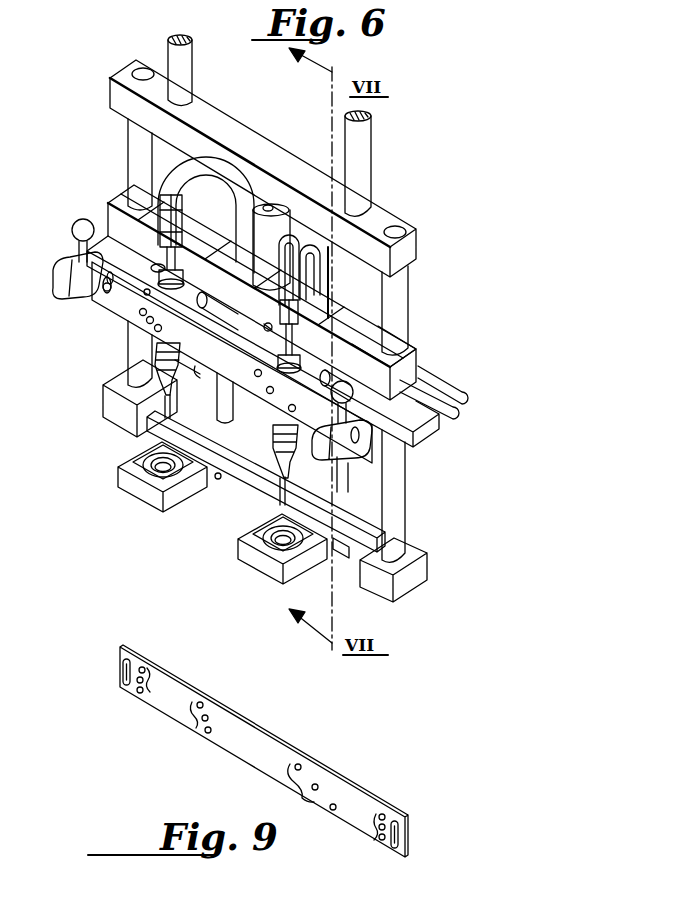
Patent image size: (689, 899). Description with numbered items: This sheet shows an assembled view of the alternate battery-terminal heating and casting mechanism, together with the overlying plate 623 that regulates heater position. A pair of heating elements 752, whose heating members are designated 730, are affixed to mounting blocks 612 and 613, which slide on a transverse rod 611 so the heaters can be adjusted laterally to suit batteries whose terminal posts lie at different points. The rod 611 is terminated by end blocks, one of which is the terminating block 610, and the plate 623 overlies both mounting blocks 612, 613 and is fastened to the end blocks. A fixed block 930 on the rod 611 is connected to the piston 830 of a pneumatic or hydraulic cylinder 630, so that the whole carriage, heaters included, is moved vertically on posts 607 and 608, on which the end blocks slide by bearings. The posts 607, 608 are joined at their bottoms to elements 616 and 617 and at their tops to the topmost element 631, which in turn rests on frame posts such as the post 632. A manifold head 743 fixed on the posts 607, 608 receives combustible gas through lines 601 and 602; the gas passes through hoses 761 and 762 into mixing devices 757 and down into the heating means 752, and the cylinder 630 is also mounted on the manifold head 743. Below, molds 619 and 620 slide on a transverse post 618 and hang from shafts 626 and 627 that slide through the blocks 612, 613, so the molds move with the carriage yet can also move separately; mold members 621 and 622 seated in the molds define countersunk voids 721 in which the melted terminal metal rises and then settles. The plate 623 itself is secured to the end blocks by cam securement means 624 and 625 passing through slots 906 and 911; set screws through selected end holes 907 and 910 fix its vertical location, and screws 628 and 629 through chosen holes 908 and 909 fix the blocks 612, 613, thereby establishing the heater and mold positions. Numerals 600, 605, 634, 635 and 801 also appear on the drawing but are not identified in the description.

In FIG. 6, the clamp arch tube 600 is at (182, 163).
In FIG. 6, the line 601 is at (450, 414).
In FIG. 6, the line 602 is at (438, 377).
In FIG. 6, the inner tube 605 is at (226, 195).
In FIG. 6, the post 607 is at (406, 278).
In FIG. 6, the post 608 is at (130, 137).
In FIG. 6, the terminating block 610 is at (105, 225).
In FIG. 6, the transverse rod 611 is at (108, 279).
In FIG. 6, the mounting block 612 is at (100, 292).
In FIG. 6, the mounting block 613 is at (321, 363).
In FIG. 6, the element 616 is at (112, 411).
In FIG. 6, the element 617 is at (410, 588).
In FIG. 6, the transverse post 618 is at (253, 484).
In FIG. 6, the mold 619 is at (132, 480).
In FIG. 6, the mold 620 is at (285, 565).
In FIG. 6, the mold member 621 is at (150, 459).
In FIG. 6, the mold member 622 is at (265, 540).
In FIG. 6, the plate 623 is at (192, 60).
In FIG. 9, the plate 623 is at (261, 746).
In FIG. 6, the cam means 624 is at (54, 266).
In FIG. 6, the cam means 625 is at (398, 469).
In FIG. 6, the shaft 626 is at (182, 366).
In FIG. 6, the shaft 627 is at (343, 467).
In FIG. 9, the shaft 627 is at (0, 685).
In FIG. 6, the screw 628 is at (147, 316).
In FIG. 6, the screw 629 is at (267, 391).
In FIG. 6, the pneumatic or hydraulic cylinder 630 is at (271, 228).
In FIG. 6, the topmost element 631 is at (384, 203).
In FIG. 6, the post 632 is at (362, 143).
In FIG. 6, the pin 634 is at (217, 477).
In FIG. 6, the stud 635 is at (340, 550).
In FIG. 6, the void 721 is at (167, 472).
In FIG. 6, the heating element 730 is at (167, 407).
In FIG. 6, the manifold head 743 is at (410, 350).
In FIG. 6, the heating element 752 is at (174, 376).
In FIG. 6, the mixing device 757 is at (135, 198).
In FIG. 6, the hose 761 is at (329, 274).
In FIG. 6, the hose 762 is at (292, 242).
In FIG. 6, the element 801 is at (0, 566).
In FIG. 6, the piston 830 is at (265, 327).
In FIG. 6, the fixed block 930 is at (199, 372).
In FIG. 9, the slot 906 is at (400, 838).
In FIG. 9, the set of openings 907 is at (373, 822).
In FIG. 9, the set of openings 908 is at (300, 788).
In FIG. 9, the set of openings 909 is at (193, 718).
In FIG. 9, the set of openings 910 is at (158, 686).
In FIG. 9, the slot 911 is at (123, 667).